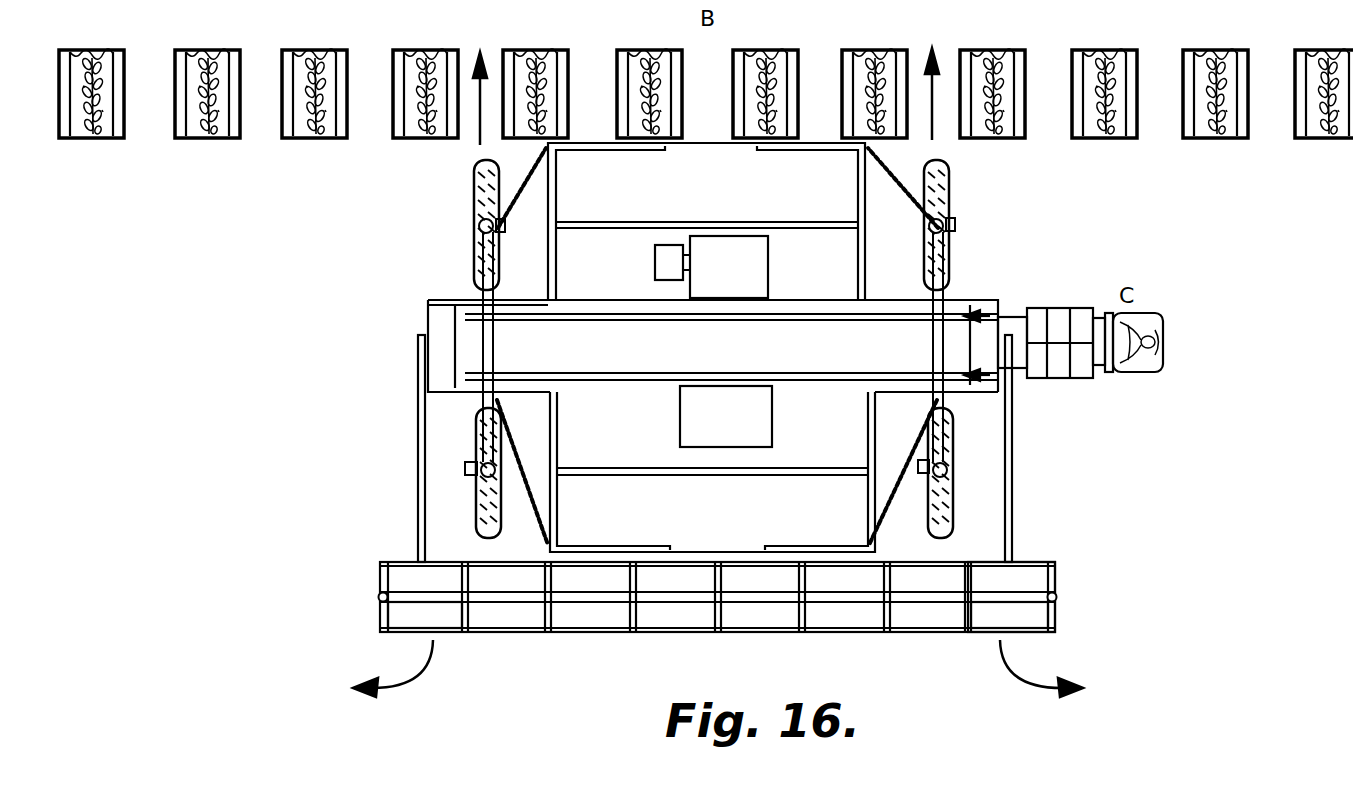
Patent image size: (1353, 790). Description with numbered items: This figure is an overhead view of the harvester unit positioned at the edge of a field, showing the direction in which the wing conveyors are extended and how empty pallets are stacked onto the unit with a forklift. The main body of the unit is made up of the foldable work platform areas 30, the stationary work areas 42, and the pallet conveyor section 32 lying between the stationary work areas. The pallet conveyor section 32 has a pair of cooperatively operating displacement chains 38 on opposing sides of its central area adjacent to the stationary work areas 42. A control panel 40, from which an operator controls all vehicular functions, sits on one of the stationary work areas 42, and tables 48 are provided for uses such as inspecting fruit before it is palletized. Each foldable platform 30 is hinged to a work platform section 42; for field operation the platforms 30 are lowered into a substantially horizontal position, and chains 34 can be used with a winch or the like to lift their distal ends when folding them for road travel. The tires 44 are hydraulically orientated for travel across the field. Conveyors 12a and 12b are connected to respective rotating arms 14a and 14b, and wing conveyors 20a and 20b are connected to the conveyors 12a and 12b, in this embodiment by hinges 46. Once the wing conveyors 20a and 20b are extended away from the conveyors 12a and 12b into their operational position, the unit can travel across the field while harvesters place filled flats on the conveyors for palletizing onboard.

The foldable work platform area 30 is at (737, 521).
The pallet conveyor section 32 is at (757, 352).
The stationary work area 42 is at (640, 454).
The table 48 is at (748, 270).
The control panel 40 is at (668, 245).
The displacement chain 38 is at (866, 368).
The chain 34 is at (968, 436).
The tire 44 is at (952, 525).
The rotating arm 14a is at (418, 437).
The rotating arm 14b is at (1012, 470).
The conveyor 12a is at (408, 572).
The conveyor 12b is at (1020, 572).
The hinge 46 is at (1057, 597).
The wing conveyor 20a is at (408, 617).
The wing conveyor 20b is at (1032, 615).